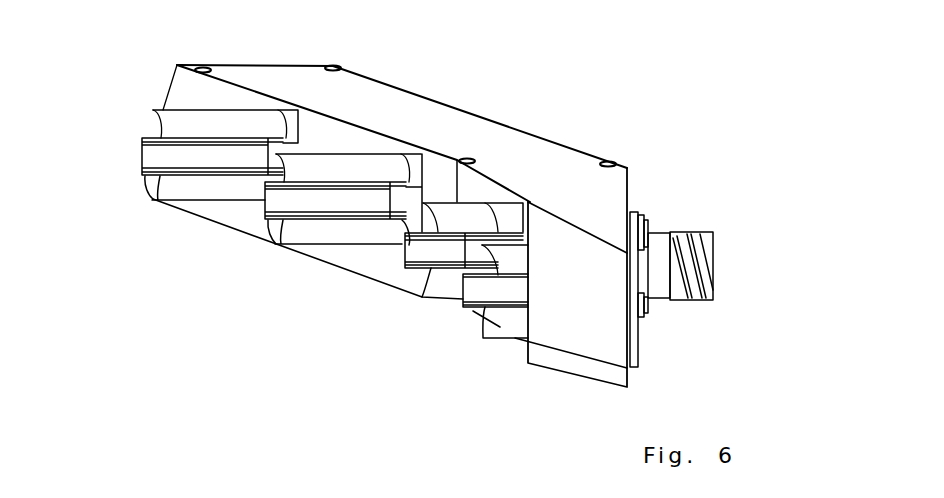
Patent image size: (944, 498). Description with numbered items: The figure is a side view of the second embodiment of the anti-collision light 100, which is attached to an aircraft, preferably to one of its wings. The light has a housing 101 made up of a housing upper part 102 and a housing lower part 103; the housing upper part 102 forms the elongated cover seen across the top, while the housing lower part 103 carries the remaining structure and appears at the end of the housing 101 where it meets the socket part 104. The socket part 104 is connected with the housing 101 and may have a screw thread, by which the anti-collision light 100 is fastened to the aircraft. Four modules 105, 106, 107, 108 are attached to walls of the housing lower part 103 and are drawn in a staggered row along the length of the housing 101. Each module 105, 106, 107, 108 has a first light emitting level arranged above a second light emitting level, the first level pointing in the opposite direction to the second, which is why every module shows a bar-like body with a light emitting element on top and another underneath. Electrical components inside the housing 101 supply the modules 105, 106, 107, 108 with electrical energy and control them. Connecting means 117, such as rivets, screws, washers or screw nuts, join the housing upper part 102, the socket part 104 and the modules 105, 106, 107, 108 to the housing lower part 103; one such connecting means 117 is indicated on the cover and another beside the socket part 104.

The anti-collision light 100 is at (700, 87).
The housing 101 is at (395, 205).
The housing upper part 102 is at (497, 123).
The housing lower part 103 is at (590, 328).
The socket part 104 is at (688, 231).
The module 105 is at (198, 203).
The module 106 is at (330, 243).
The module 107 is at (440, 300).
The module 108 is at (512, 338).
The connecting means 117 is at (332, 66).